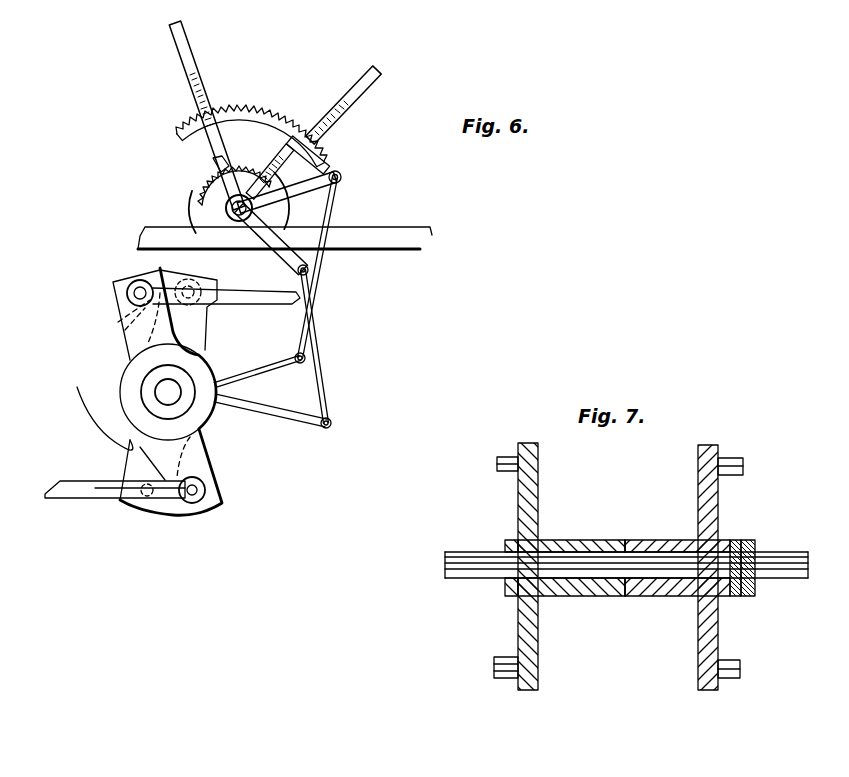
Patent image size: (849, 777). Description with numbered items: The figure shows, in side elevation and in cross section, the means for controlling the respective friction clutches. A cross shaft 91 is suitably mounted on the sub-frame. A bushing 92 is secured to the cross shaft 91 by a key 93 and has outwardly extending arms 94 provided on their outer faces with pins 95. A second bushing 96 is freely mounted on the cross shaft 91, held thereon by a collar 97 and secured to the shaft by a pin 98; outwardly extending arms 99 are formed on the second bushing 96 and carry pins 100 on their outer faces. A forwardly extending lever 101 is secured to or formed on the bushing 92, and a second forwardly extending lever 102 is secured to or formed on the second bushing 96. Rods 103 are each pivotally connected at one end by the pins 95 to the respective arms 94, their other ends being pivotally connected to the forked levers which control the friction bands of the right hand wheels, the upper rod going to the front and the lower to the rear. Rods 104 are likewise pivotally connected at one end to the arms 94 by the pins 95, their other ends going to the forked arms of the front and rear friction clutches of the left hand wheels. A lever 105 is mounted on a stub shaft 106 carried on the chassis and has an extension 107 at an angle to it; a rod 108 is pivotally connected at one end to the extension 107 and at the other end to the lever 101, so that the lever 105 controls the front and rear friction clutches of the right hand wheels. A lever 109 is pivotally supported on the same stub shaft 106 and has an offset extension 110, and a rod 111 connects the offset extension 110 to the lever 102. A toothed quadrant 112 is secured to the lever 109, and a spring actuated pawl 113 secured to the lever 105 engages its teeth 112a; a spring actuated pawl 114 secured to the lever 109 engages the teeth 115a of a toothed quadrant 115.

In FIG. 6, the cross shaft 91 is at (168, 394).
In FIG. 7, the cross shaft 91 is at (466, 566).
In FIG. 7, the bushing 92 is at (581, 538).
In FIG. 7, the key 93 is at (541, 549).
In FIG. 6, the outwardly extending arms 94 is at (132, 440).
In FIG. 7, the outwardly extending arms 94 is at (531, 457).
In FIG. 6, the pins 95 is at (137, 328).
In FIG. 7, the pins 95 is at (505, 458).
In FIG. 7, the second bushing 96 is at (642, 596).
In FIG. 7, the collar 97 is at (752, 541).
In FIG. 7, the pin 98 is at (739, 540).
In FIG. 6, the outwardly extending arms 99 is at (183, 331).
In FIG. 7, the outwardly extending arms 99 is at (703, 481).
In FIG. 6, the pins 100 is at (136, 290).
In FIG. 7, the pins 100 is at (728, 458).
In FIG. 6, the forwardly extending lever 101 is at (256, 371).
In FIG. 6, the second forwardly extending lever 102 is at (233, 407).
In FIG. 6, the rods 103 is at (233, 293).
In FIG. 6, the rods 104 is at (272, 297).
In FIG. 6, the lever 105 is at (180, 32).
In FIG. 6, the stub shaft 106 is at (225, 204).
In FIG. 6, the extension 107 is at (334, 171).
In FIG. 6, the rod 108 is at (323, 263).
In FIG. 6, the lever 109 is at (375, 68).
In FIG. 6, the offset extension 110 is at (282, 250).
In FIG. 6, the rod 111 is at (316, 357).
In FIG. 6, the toothed quadrant 112 is at (296, 124).
In FIG. 6, the teeth 112a is at (263, 113).
In FIG. 6, the spring actuated pawl 113 is at (215, 110).
In FIG. 6, the spring actuated pawl 114 is at (273, 160).
In FIG. 6, the toothed quadrant 115 is at (207, 213).
In FIG. 6, the teeth 115a is at (214, 166).